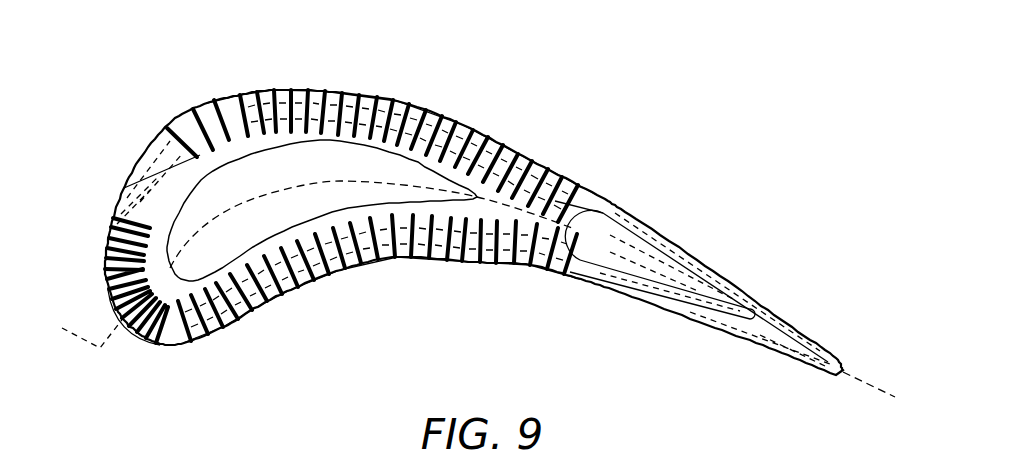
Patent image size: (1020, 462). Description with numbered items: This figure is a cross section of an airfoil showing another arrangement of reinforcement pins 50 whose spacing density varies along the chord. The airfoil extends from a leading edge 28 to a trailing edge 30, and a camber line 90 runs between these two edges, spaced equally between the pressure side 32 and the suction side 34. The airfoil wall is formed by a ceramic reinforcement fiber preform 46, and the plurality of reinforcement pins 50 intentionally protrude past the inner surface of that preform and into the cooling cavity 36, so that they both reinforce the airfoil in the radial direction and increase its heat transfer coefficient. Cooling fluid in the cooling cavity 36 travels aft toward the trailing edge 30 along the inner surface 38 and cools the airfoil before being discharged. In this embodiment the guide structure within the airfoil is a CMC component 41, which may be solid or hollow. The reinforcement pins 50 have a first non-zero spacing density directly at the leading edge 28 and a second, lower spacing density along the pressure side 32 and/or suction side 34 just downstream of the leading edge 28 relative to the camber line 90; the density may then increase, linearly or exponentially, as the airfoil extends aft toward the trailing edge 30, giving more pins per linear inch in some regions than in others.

The leading edge 28 is at (130, 345).
The trailing edge 30 is at (462, 211).
The pressure side 32 is at (474, 282).
The suction side 34 is at (362, 78).
The cooling cavity 36 is at (201, 106).
The inner surface 38 is at (172, 199).
The CMC component 41 is at (115, 214).
The ceramic reinforcement fiber preform 46 is at (620, 196).
The reinforcement pins 50 is at (450, 99).
The camber line 90 is at (77, 330).